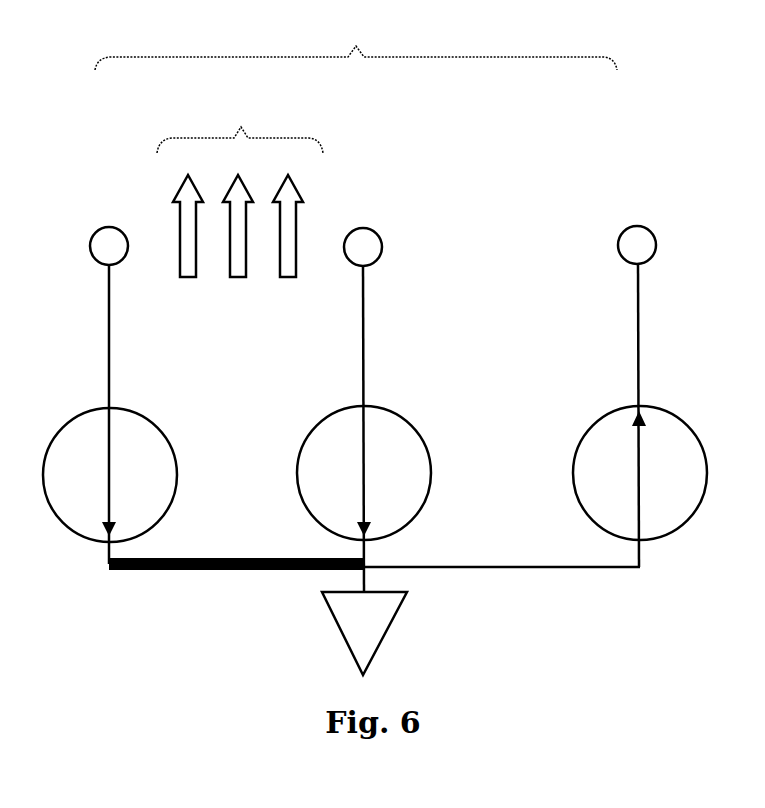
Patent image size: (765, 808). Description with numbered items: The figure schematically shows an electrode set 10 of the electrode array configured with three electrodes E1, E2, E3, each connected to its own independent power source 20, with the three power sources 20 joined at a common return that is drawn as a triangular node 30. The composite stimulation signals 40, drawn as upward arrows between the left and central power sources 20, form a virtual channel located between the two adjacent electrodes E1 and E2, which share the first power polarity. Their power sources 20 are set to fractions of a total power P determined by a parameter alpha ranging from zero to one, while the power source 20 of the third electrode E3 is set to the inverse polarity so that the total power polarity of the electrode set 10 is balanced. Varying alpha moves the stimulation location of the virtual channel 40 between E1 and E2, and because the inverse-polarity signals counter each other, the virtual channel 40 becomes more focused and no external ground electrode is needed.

The electrode set 10 is at (356, 44).
The independent power source 20 is at (70, 410).
The generator / ground 30 is at (398, 620).
The composite stimulation signal (virtual channel) 40 is at (240, 191).
The first electrode E1 is at (109, 230).
The second electrode E2 is at (363, 232).
The third electrode E3 is at (637, 233).